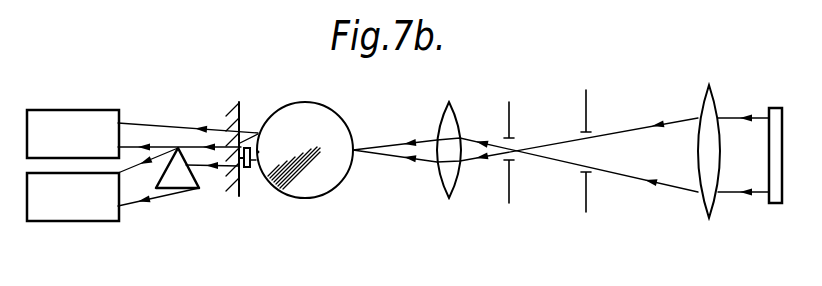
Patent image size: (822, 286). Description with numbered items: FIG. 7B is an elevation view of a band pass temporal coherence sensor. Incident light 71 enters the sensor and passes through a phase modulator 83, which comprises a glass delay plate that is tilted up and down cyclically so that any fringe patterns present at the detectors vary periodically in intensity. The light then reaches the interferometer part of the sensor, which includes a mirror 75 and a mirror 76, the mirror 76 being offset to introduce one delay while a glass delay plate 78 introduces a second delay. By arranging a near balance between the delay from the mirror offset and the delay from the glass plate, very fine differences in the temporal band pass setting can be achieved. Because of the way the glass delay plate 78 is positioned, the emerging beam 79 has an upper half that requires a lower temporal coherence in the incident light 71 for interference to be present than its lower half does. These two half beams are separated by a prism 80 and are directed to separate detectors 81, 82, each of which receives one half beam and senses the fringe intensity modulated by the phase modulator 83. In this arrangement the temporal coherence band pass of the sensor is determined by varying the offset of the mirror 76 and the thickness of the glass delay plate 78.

The incident light 71 is at (757, 163).
The mirror 75 is at (243, 197).
The mirror 76 is at (328, 183).
The glass delay plate 78 is at (250, 172).
The beam 79 is at (222, 165).
The prism 80 is at (180, 176).
The detector 81 is at (74, 114).
The detector 82 is at (77, 211).
The phase modulator 83 is at (773, 107).